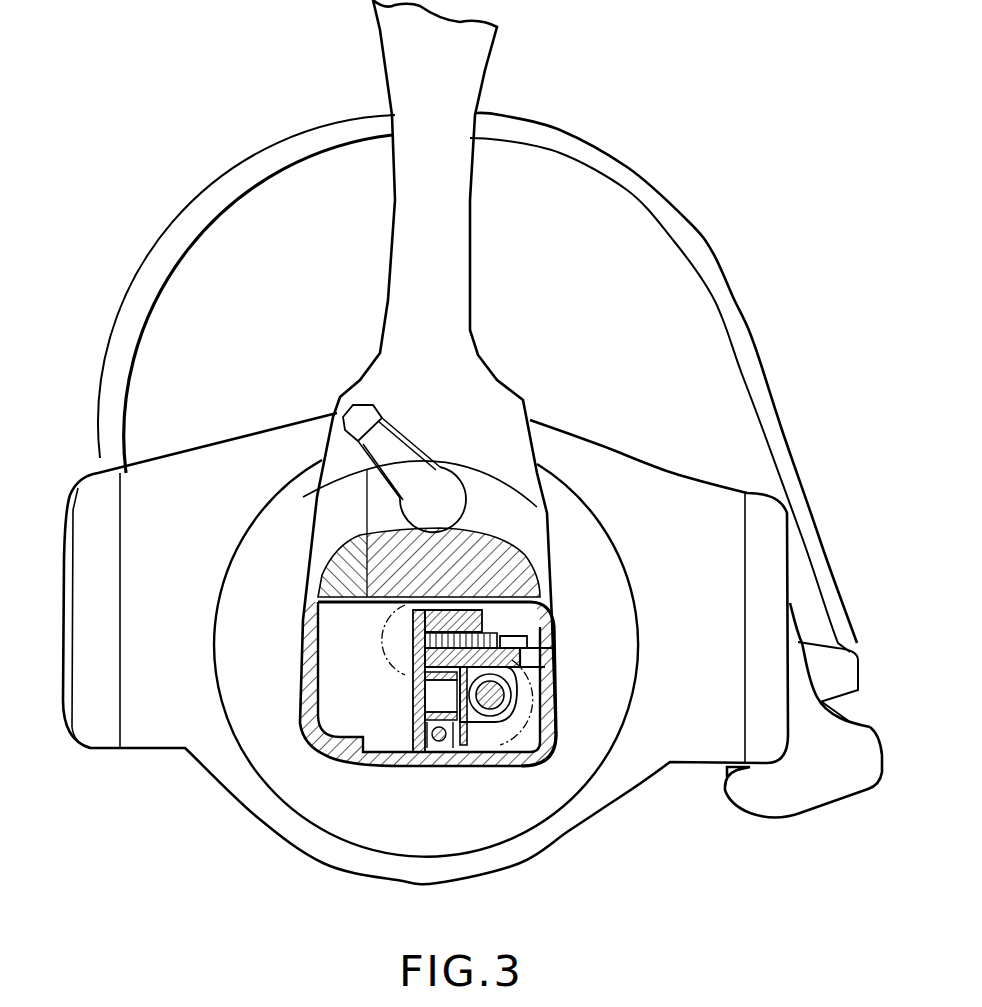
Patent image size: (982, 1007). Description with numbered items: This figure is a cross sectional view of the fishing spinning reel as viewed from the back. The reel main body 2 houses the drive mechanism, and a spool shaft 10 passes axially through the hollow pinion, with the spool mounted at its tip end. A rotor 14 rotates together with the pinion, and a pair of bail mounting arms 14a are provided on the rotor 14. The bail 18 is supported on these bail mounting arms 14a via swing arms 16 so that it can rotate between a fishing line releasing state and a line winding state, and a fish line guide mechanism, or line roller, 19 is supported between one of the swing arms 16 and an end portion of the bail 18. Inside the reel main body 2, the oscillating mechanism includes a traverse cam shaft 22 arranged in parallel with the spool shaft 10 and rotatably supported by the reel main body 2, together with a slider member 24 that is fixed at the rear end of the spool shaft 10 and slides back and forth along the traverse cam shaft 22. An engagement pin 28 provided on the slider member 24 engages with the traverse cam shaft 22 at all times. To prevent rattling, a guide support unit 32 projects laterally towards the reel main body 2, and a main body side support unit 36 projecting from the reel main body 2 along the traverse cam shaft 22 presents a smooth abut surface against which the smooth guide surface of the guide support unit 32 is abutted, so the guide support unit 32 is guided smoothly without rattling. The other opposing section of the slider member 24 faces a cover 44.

The reel main body 2 is at (360, 380).
The spool shaft 10 is at (410, 660).
The rotor 14 is at (673, 473).
The bail mounting arms 14a is at (127, 460).
The swing arms 16 is at (797, 813).
The bail 18 is at (553, 152).
The fish line guide mechanism (line roller) 19 is at (860, 682).
The traverse cam shaft 22 is at (507, 697).
The slider member 24 is at (477, 613).
The engagement pin 28 is at (467, 723).
The guide support unit 32 is at (530, 658).
The main body side support unit (guide member) 36 is at (522, 640).
The cover 44 is at (303, 573).